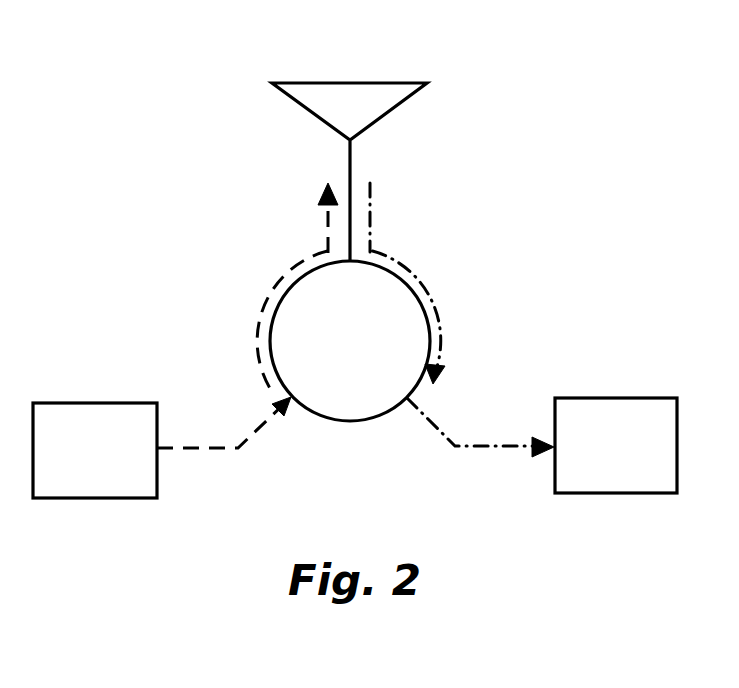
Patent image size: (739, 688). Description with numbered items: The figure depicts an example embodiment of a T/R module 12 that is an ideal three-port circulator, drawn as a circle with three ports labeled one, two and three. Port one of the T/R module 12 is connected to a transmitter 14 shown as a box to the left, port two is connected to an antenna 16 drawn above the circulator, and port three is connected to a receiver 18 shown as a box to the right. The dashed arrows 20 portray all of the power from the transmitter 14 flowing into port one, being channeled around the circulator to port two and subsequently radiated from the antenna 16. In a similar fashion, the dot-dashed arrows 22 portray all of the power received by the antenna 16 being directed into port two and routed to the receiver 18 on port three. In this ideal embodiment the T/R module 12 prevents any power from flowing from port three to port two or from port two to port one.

The T/R module 12 is at (340, 421).
The transmitter 14 is at (77, 403).
The antenna 16 is at (328, 83).
The receiver 18 is at (602, 398).
The dashed arrows 20 is at (274, 287).
The dot-dashed arrows 22 is at (423, 282).